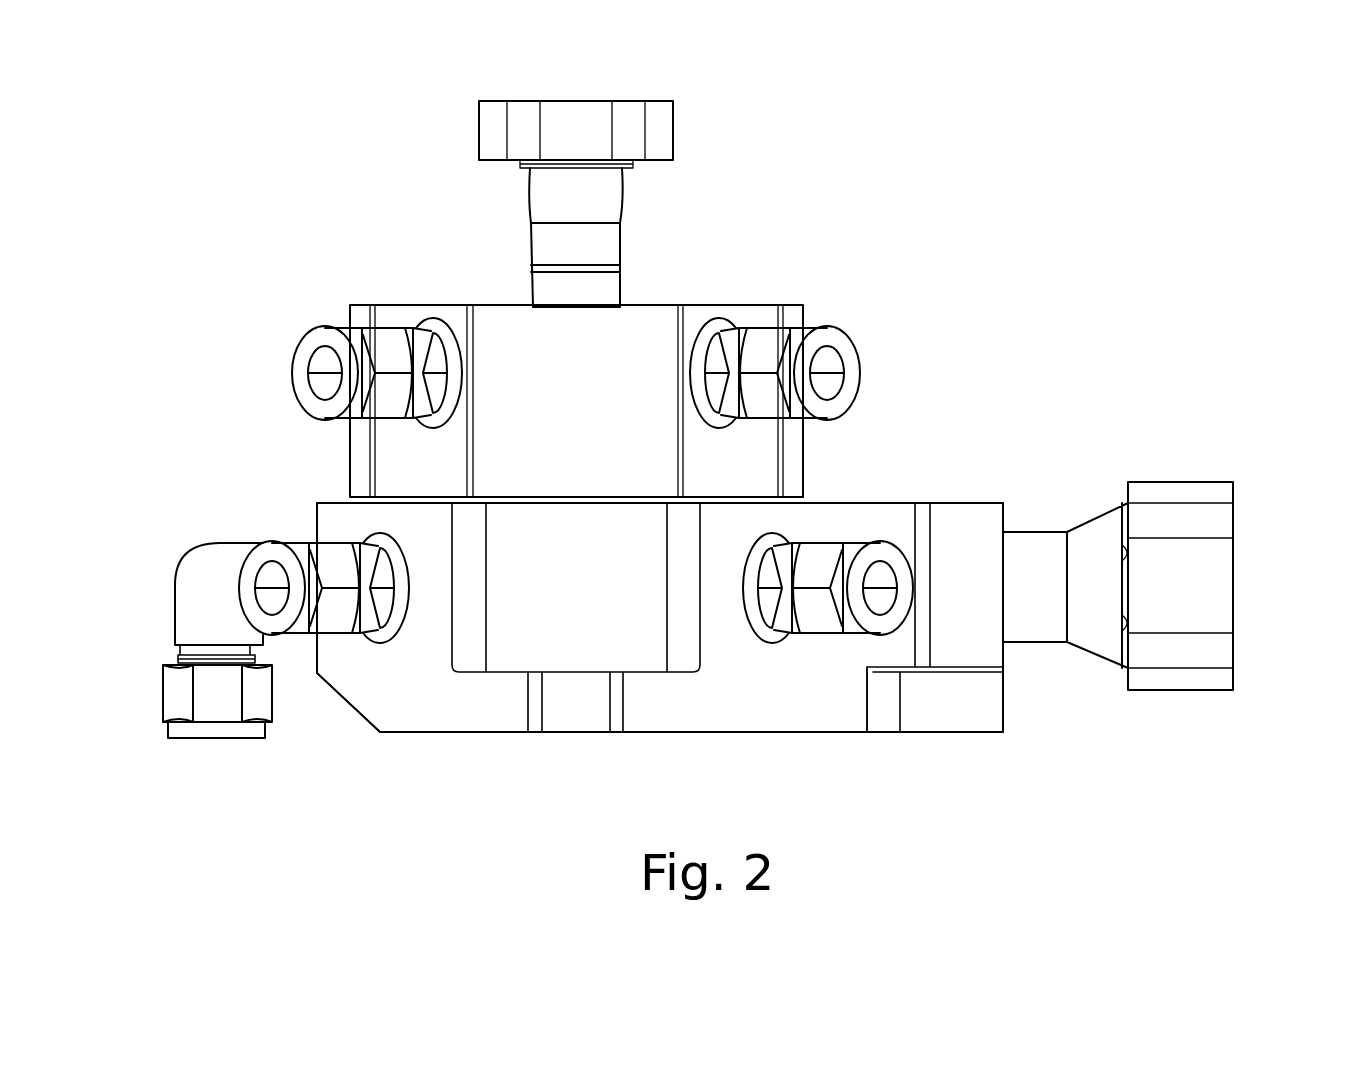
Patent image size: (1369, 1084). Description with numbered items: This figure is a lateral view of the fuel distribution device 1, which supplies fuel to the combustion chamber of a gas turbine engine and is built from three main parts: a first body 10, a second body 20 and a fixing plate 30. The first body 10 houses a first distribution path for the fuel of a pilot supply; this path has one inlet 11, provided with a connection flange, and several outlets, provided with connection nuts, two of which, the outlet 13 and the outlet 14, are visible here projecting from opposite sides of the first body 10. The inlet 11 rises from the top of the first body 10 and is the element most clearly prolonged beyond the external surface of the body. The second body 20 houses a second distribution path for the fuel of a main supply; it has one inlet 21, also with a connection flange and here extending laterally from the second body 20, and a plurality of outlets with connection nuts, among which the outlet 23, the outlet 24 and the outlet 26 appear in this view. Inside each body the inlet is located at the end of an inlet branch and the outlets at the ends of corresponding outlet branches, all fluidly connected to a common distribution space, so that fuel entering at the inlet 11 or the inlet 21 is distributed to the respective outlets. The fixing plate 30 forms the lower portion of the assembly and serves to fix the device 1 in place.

The fuel distribution device 1 is at (921, 266).
The first body 10 is at (607, 372).
The inlet 11 is at (564, 197).
The outlet 13 is at (843, 362).
The outlet 14 is at (325, 368).
The second body 20 is at (962, 537).
The inlet 21 is at (1210, 582).
The outlet 23 is at (877, 598).
The outlet 24 is at (277, 603).
The outlet 26 is at (208, 593).
The fixing plate 30 is at (478, 710).